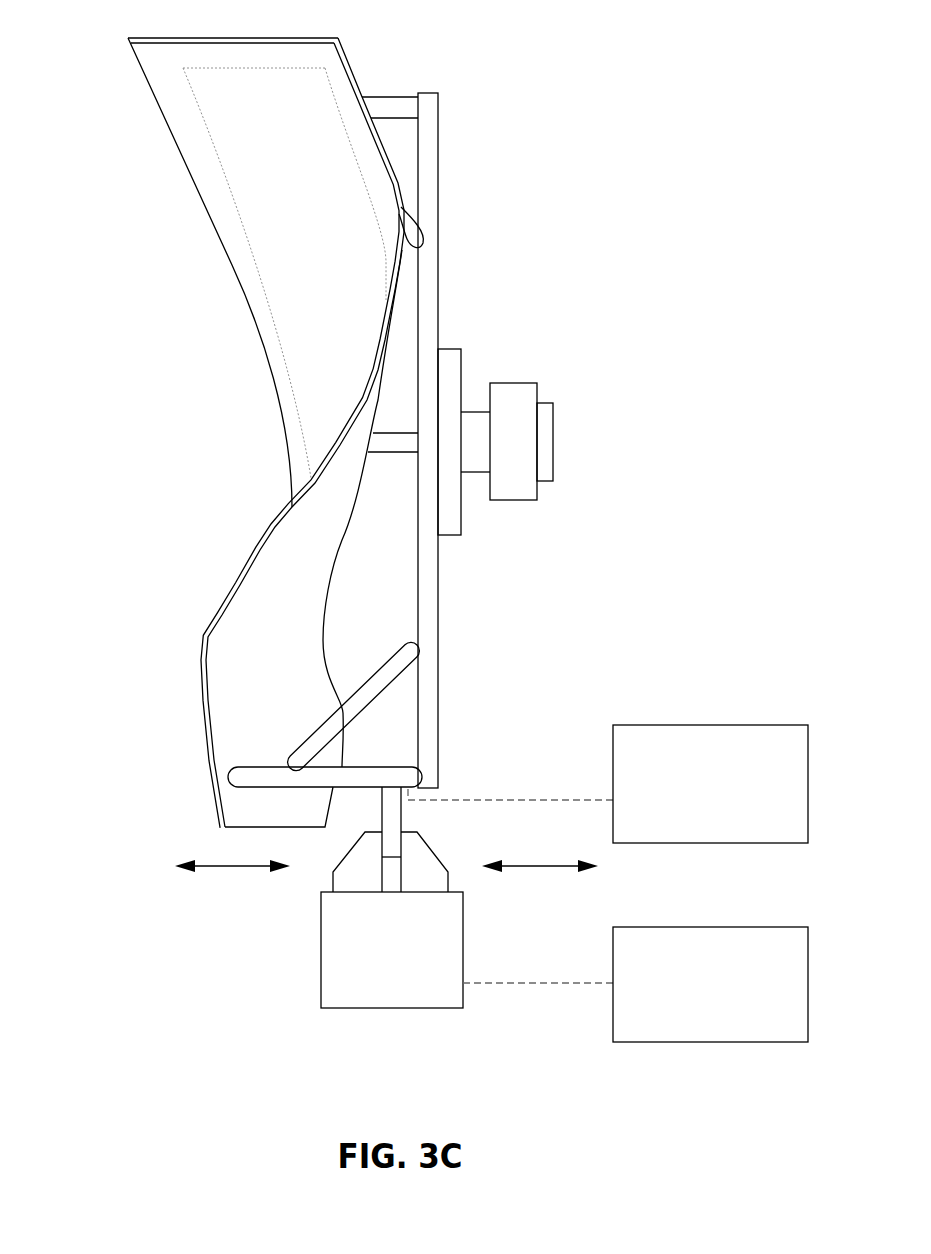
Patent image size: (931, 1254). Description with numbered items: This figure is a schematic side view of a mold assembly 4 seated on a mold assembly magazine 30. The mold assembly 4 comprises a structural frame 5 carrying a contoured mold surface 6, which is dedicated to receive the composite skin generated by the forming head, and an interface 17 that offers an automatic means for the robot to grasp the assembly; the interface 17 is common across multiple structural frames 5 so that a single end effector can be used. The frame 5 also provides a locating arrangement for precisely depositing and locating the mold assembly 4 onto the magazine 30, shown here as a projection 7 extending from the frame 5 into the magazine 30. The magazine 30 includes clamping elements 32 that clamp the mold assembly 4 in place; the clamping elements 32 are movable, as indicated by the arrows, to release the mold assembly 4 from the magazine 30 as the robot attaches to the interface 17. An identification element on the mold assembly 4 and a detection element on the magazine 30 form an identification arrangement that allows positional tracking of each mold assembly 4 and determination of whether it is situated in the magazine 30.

The mold assembly 4 is at (565, 110).
The structural frame 5 is at (438, 713).
The contoured mold surface 6 is at (232, 582).
The projection 7 is at (403, 815).
The interface 17 is at (527, 383).
The mold assembly magazine 30 is at (463, 930).
The clamping element 32 is at (348, 873).